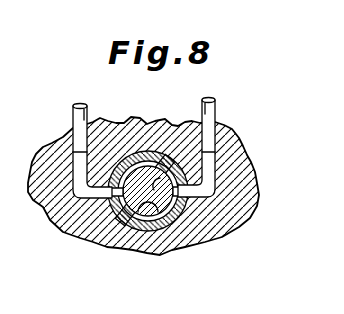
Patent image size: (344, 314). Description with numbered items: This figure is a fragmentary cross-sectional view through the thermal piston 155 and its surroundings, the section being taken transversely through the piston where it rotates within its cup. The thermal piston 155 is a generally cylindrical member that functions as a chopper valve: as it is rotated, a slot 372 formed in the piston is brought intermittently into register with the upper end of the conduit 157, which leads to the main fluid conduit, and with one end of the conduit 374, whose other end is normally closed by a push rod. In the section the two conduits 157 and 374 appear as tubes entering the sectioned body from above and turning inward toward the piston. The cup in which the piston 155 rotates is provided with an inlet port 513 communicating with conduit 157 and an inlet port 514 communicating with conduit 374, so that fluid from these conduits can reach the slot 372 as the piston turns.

The thermal piston 155 is at (118, 225).
The conduit 157 is at (79, 113).
The slot 372 is at (122, 163).
The conduit 374 is at (213, 117).
The inlet port 513 is at (96, 202).
The inlet port 514 is at (165, 197).